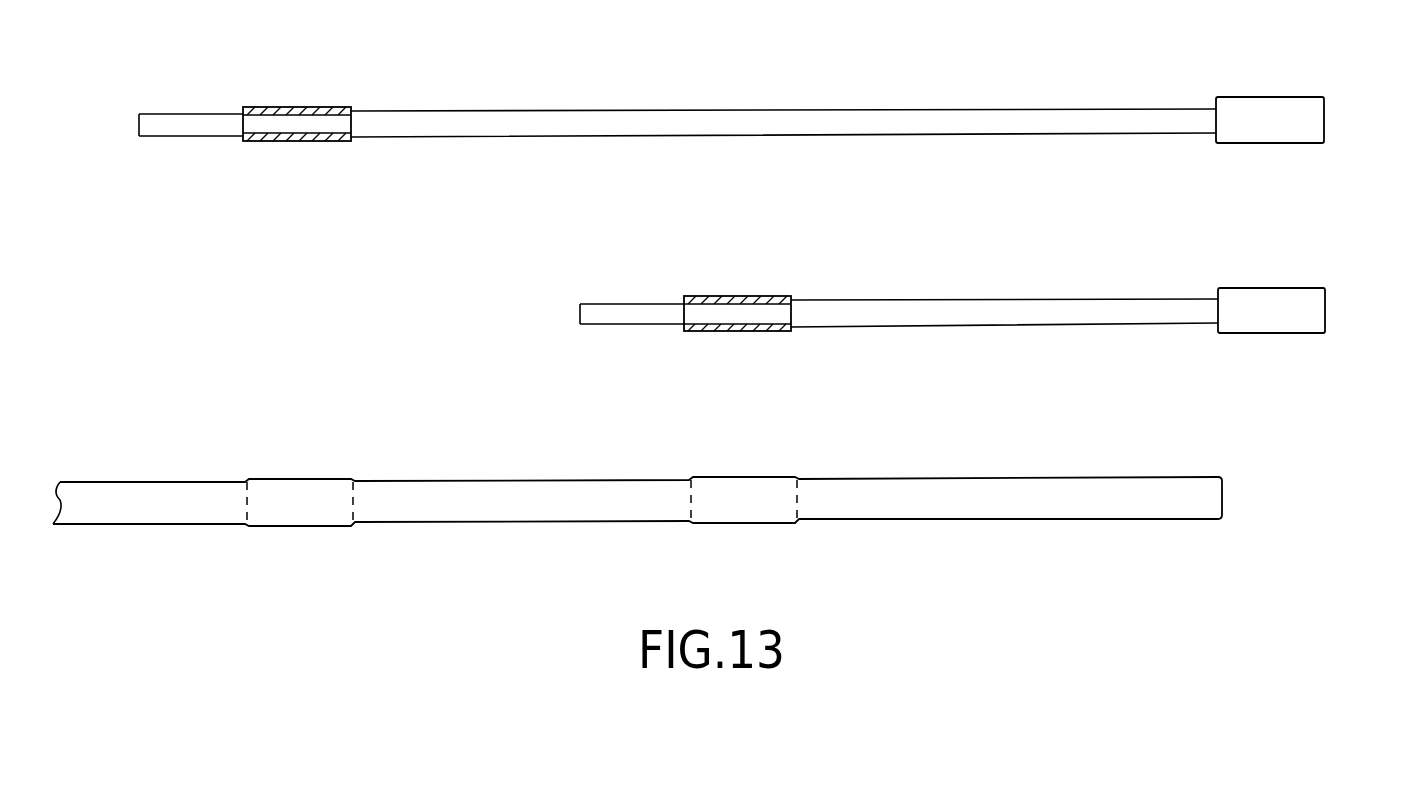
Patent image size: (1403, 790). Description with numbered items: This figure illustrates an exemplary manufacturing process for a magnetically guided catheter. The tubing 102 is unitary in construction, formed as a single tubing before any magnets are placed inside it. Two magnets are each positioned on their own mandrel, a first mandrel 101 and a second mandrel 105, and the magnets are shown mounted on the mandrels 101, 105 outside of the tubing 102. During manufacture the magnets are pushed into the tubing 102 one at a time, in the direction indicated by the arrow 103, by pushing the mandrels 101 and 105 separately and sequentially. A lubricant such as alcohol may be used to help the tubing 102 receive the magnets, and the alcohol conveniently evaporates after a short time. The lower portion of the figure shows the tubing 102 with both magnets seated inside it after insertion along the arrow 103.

The mandrel 101 is at (999, 109).
The tubing 102 is at (142, 482).
The arrow 103 is at (1247, 500).
The mandrel 105 is at (1000, 299).